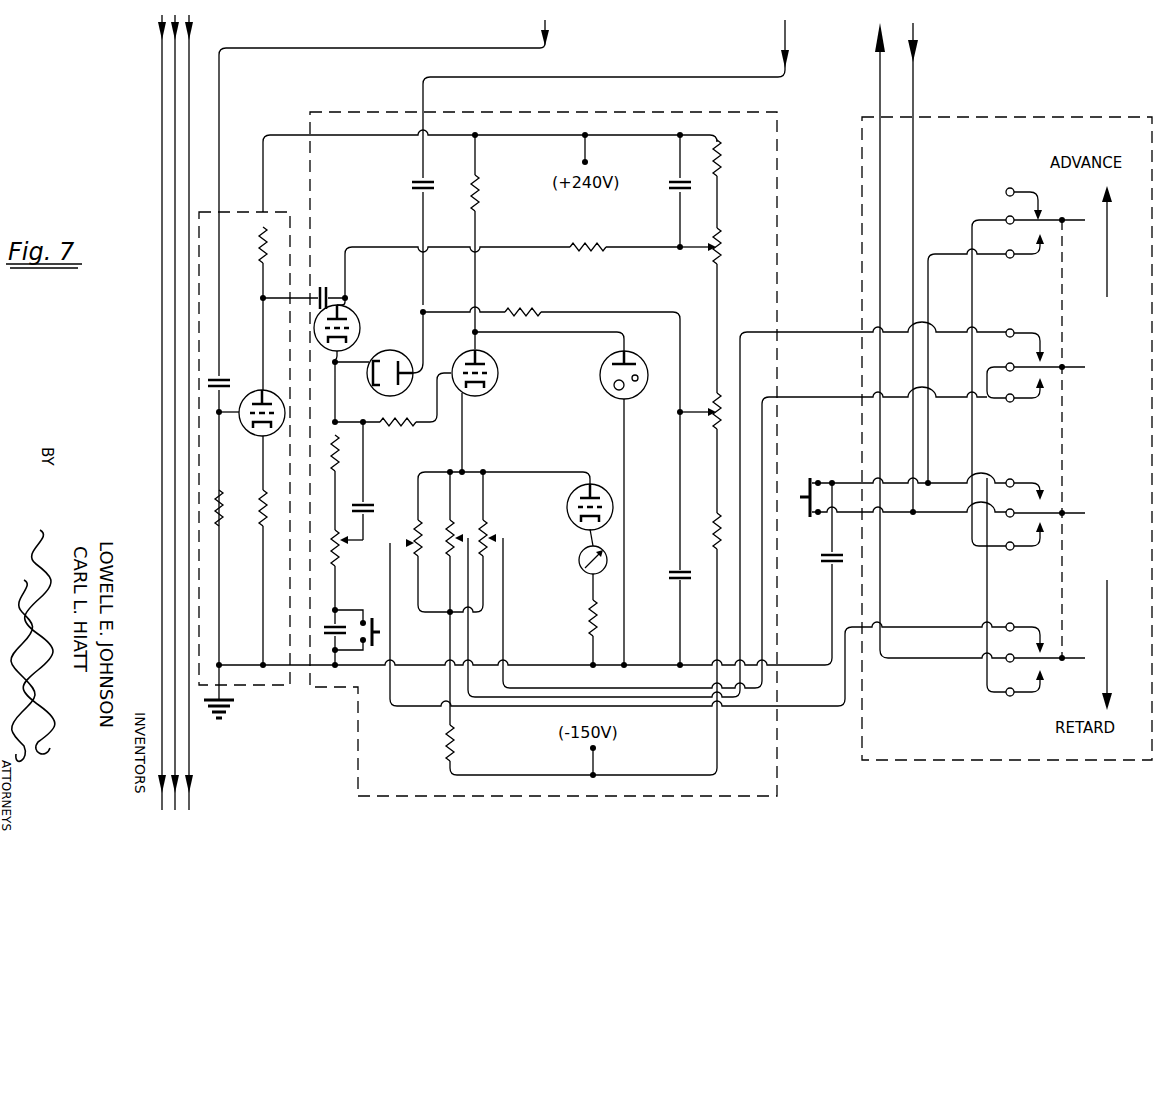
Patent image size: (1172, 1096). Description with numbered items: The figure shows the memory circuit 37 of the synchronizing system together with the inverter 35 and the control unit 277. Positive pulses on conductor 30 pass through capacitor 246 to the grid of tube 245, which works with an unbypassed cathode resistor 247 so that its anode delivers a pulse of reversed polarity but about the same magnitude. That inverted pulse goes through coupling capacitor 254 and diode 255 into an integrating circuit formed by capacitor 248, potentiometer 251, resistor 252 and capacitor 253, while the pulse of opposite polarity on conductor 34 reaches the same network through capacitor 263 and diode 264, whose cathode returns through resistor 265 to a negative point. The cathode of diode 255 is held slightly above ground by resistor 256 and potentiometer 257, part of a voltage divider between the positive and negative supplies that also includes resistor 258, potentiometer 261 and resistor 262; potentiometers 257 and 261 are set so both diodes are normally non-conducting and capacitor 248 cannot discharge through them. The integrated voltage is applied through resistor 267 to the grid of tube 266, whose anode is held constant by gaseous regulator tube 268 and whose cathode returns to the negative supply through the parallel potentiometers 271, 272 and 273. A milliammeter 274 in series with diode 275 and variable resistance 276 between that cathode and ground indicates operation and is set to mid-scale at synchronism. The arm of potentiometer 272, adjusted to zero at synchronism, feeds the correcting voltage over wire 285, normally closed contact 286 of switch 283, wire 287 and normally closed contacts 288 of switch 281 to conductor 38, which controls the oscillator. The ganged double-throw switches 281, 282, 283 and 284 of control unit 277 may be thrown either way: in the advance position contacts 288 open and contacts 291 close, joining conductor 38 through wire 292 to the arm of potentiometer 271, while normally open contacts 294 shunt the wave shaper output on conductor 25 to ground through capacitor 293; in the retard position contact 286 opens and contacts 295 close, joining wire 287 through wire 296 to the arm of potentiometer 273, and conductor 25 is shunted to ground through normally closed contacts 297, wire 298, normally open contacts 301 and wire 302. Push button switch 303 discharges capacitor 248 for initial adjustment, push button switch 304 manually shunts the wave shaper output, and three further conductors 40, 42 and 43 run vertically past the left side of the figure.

The conductor 25 is at (918, 104).
The conductor 30 is at (546, 48).
The conductor 34 is at (425, 106).
The inverter 35 is at (253, 206).
The memory circuit 37 is at (330, 108).
The line 38 is at (878, 70).
The conductor 40 is at (173, 98).
The conductor 42 is at (190, 58).
The conductor 43 is at (160, 67).
The tube 245 is at (258, 438).
The capacitor 246 is at (243, 365).
The cathode resistor 247 is at (259, 519).
The capacitor 248 is at (356, 627).
The potentiometer 251 is at (342, 548).
The resistor 252 is at (342, 455).
The capacitor 253 is at (368, 508).
The coupling capacitor 254 is at (322, 286).
The diode 255 is at (350, 318).
The resistor 256 is at (598, 228).
The potentiometer 257 is at (723, 250).
The resistor 258 is at (710, 519).
The potentiometer 261 is at (712, 400).
The resistor 262 is at (723, 157).
The capacitor 263 is at (418, 182).
The diode 264 is at (389, 348).
The resistor 265 is at (522, 306).
The tube 266 is at (499, 370).
The resistor 267 is at (404, 428).
The gaseous regulator tube 268 is at (598, 382).
The potentiometer 271 is at (424, 554).
The potentiometer 272 is at (458, 517).
The potentiometer 273 is at (490, 522).
The milliammeter 274 is at (579, 562).
The diode 275 is at (577, 500).
The variable resistance 276 is at (588, 606).
The control unit 277 is at (984, 112).
The switch 281 is at (1050, 670).
The switch 282 is at (1054, 523).
The switch 283 is at (1054, 376).
The switch 284 is at (1057, 229).
The wire 285 is at (742, 380).
The normally closed contact 286 is at (1003, 345).
The wire 287 is at (982, 596).
The normally closed contacts 288 is at (1017, 682).
The normally open contacts 291 is at (1017, 638).
The wire 292 is at (434, 702).
The capacitor 293 is at (830, 562).
The normally open contacts 294 is at (1018, 493).
The normally open contacts 295 is at (1004, 377).
The wire 296 is at (608, 692).
The normally closed contacts 297 is at (1016, 535).
The wire 298 is at (968, 442).
The normally open contacts 301 is at (1004, 234).
The wire 302 is at (933, 301).
The push button switch 303 is at (383, 617).
The push button switch 304 is at (817, 479).